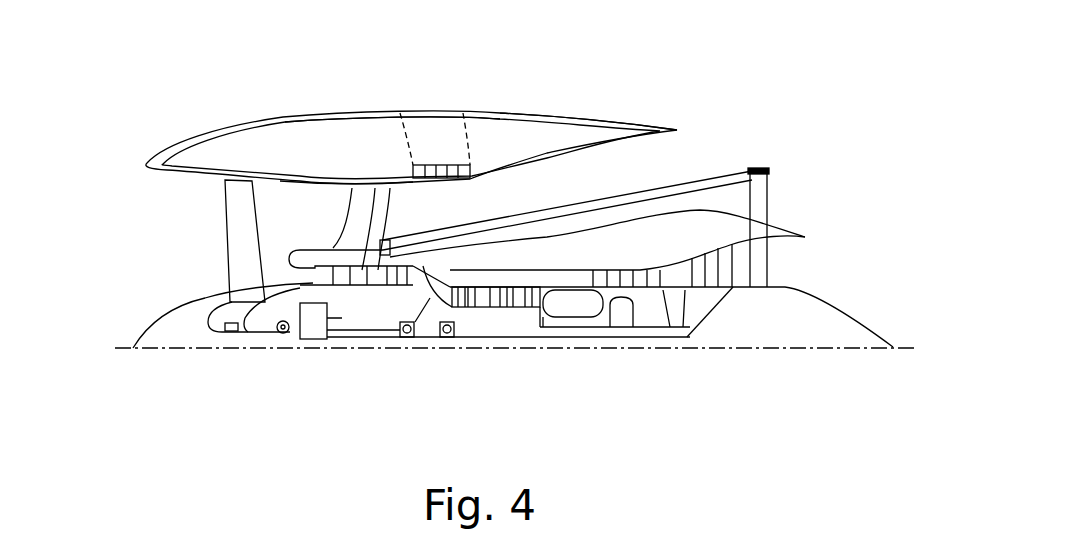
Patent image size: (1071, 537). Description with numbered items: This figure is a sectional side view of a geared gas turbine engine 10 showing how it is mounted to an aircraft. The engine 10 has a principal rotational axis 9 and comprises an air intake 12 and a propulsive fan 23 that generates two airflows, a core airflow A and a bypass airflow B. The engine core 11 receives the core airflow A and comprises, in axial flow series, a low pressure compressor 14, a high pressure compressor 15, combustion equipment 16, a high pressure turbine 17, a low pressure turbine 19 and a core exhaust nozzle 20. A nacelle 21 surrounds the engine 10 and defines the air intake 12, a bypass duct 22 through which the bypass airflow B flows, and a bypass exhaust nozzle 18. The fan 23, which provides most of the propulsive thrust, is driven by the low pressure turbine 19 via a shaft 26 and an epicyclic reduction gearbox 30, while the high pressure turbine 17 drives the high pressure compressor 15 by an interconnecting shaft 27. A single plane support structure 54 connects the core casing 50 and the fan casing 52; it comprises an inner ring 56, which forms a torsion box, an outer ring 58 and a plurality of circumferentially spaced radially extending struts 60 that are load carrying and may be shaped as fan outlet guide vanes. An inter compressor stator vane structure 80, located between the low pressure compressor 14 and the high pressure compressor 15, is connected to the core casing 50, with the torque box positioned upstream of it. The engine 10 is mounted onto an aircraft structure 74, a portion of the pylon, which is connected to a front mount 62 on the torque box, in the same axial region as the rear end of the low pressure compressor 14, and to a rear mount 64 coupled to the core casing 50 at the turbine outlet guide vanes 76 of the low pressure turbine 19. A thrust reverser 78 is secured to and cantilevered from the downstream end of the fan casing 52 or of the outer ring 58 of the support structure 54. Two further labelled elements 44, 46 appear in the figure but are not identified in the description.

The principal rotational axis 9 is at (793, 350).
The gas turbine engine 10 is at (200, 127).
The engine core 11 is at (583, 266).
The air intake 12 is at (158, 195).
The low pressure compressor 14 is at (380, 188).
The high pressure compressor 15 is at (478, 338).
The combustion equipment 16 is at (560, 300).
The high pressure turbine 17 is at (630, 267).
The bypass exhaust nozzle 18 is at (753, 163).
The low pressure turbine 19 is at (735, 290).
The core exhaust nozzle 20 is at (822, 272).
The nacelle 21 is at (430, 117).
The bypass duct 22 is at (658, 176).
The propulsive fan 23 is at (230, 257).
The shaft 26 is at (471, 338).
The interconnecting shaft 27 is at (537, 328).
The epicyclic gearbox 30 is at (312, 340).
The bypass duct outer wall 44 is at (680, 207).
The nacelle inner surface 46 is at (522, 118).
The core casing 50 is at (538, 270).
The fan casing 52 is at (278, 178).
The single plane support structure 54 is at (412, 219).
The inner ring 56 is at (343, 250).
The outer ring 58 is at (354, 188).
The struts 60 is at (347, 212).
The front mount 62 is at (387, 240).
The rear mount 64 is at (763, 235).
The aircraft structure 74 is at (713, 185).
The turbine outlet guide vanes 76 is at (757, 257).
The thrust reverser 78 is at (470, 165).
The inter compressor stator vane structure 80 is at (414, 339).
The core airflow A is at (286, 272).
The bypass airflow B is at (286, 217).